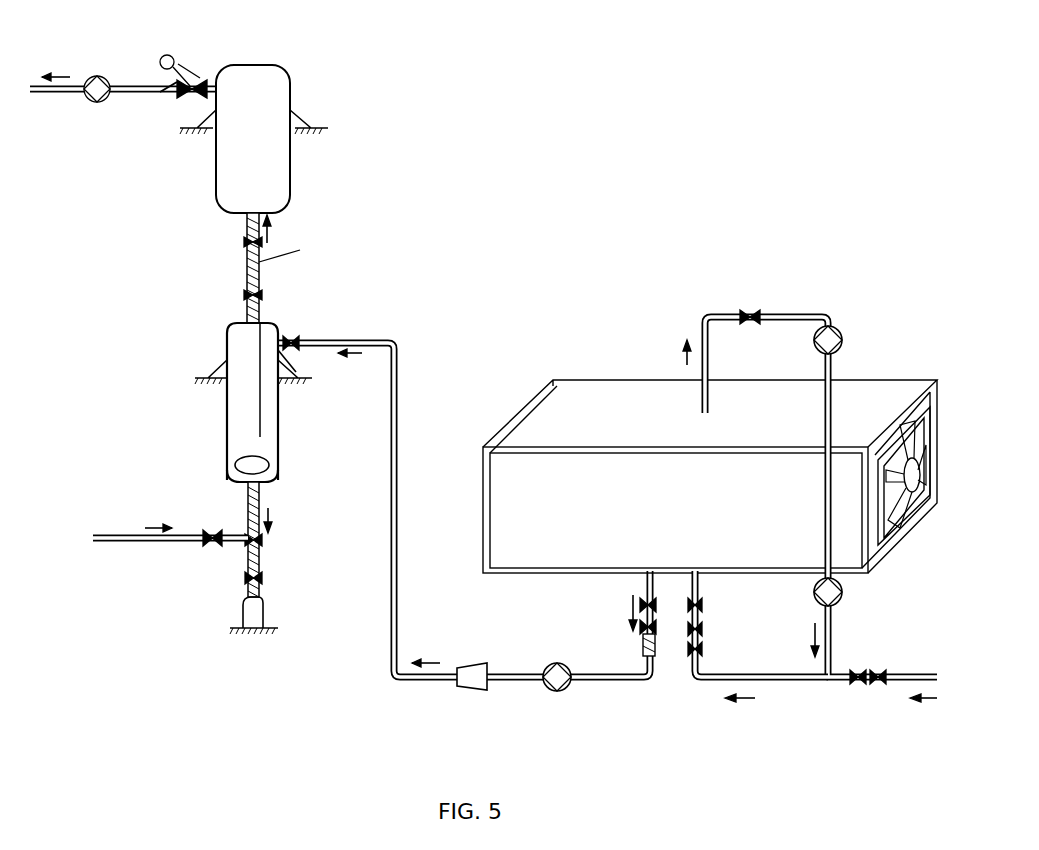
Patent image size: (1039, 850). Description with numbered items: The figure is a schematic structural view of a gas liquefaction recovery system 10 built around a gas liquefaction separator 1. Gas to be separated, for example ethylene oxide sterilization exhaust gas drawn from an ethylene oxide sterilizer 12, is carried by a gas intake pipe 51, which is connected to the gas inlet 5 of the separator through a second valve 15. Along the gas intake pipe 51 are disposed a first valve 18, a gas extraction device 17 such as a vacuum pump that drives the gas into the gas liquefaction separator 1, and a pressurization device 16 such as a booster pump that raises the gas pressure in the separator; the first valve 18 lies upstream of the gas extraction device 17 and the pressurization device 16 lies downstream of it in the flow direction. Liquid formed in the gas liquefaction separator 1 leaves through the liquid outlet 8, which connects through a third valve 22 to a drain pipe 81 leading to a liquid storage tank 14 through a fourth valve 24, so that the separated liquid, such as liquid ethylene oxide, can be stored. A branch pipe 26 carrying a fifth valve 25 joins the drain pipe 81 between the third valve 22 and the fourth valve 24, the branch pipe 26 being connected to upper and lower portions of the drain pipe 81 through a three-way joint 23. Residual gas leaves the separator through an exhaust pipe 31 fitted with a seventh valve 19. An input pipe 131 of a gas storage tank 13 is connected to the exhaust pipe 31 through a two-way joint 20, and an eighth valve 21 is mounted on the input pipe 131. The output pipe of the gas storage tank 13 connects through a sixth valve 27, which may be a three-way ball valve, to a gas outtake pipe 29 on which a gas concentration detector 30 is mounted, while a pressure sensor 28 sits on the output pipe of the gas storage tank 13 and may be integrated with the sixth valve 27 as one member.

The gas liquefaction separator 1 is at (227, 432).
The gas inlet 5 is at (284, 360).
The liquid outlet 8 is at (245, 482).
The gas liquefaction recovery system 10 is at (397, 82).
The ethylene oxide sterilizer 12 is at (900, 398).
The gas storage tank 13 is at (216, 182).
The liquid storage tank 14 is at (265, 620).
The second valve 15 is at (286, 343).
The pressurization device 16 is at (465, 690).
The gas extraction device 17 is at (562, 690).
The first valve 18 is at (640, 640).
The seventh valve 19 is at (247, 295).
The two-way joint 20 is at (259, 264).
The eighth valve 21 is at (247, 238).
The third valve 22 is at (248, 503).
The three-way joint 23 is at (262, 540).
The fourth valve 24 is at (262, 578).
The fifth valve 25 is at (212, 552).
The branch pipe 26 is at (93, 540).
The sixth valve 27 is at (180, 97).
The pressure sensor 28 is at (196, 80).
The gas outtake pipe 29 is at (55, 95).
The gas concentration detector 30 is at (96, 76).
The exhaust pipe 31 is at (250, 321).
The gas intake pipe 51 is at (386, 343).
The drain pipe 81 is at (272, 522).
The input pipe 131 is at (270, 232).